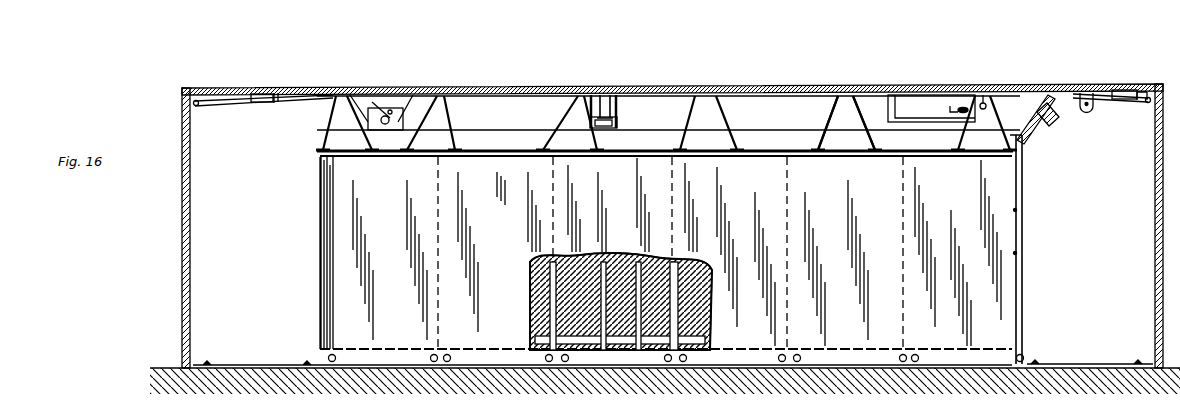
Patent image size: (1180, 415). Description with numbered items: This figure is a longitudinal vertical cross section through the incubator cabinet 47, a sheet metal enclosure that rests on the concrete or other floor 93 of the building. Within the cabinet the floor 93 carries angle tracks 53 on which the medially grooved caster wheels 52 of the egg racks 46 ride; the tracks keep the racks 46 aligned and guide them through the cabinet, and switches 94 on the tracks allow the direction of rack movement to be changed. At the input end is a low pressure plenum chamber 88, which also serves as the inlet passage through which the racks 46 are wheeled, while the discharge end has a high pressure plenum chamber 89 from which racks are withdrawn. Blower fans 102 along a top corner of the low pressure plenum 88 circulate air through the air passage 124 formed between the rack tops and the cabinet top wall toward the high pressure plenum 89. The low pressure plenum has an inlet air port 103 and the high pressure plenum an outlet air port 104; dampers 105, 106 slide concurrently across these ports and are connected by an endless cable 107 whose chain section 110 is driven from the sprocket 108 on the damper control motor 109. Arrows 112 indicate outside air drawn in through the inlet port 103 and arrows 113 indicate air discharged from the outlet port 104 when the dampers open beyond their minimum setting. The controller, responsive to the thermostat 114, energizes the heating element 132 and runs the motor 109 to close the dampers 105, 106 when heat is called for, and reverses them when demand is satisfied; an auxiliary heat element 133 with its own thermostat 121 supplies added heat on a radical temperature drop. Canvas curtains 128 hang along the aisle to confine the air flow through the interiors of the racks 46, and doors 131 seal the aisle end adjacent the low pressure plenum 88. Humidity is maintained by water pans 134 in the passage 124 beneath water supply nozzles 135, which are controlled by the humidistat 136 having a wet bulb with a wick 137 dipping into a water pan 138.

The rack 46 is at (808, 142).
The cabinet 47 is at (777, 95).
The caster wheels 52 is at (683, 363).
The tracks 53 is at (306, 364).
The low pressure plenum chamber 88 is at (1106, 213).
The high pressure plenum chamber 89 is at (258, 214).
The floor 93 is at (172, 377).
The switches 94 is at (1171, 409).
The blower fans 102 is at (1040, 127).
The inlet air port 103 is at (1130, 88).
The outlet air port 104 is at (279, 93).
The damper 105 is at (1124, 100).
The damper 106 is at (253, 103).
The endless cable 107 is at (228, 106).
The sprocket 108 is at (391, 108).
The damper control motor 109 is at (385, 110).
The chain section 110 is at (381, 100).
The arrows 112 is at (1146, 84).
The arrows 113 is at (271, 90).
The thermostat 114 is at (605, 100).
The thermostat 121 is at (619, 102).
The air passage 124 is at (812, 105).
The canvas curtains 128 is at (477, 183).
The doors 131 is at (1019, 197).
The heating element 132 is at (1087, 112).
The auxiliary heat element 133 is at (984, 102).
The water pans 134 is at (908, 120).
The water supply nozzles 135 is at (953, 103).
The humidistat 136 is at (592, 97).
The wick 137 is at (613, 116).
The water pan 138 is at (613, 123).